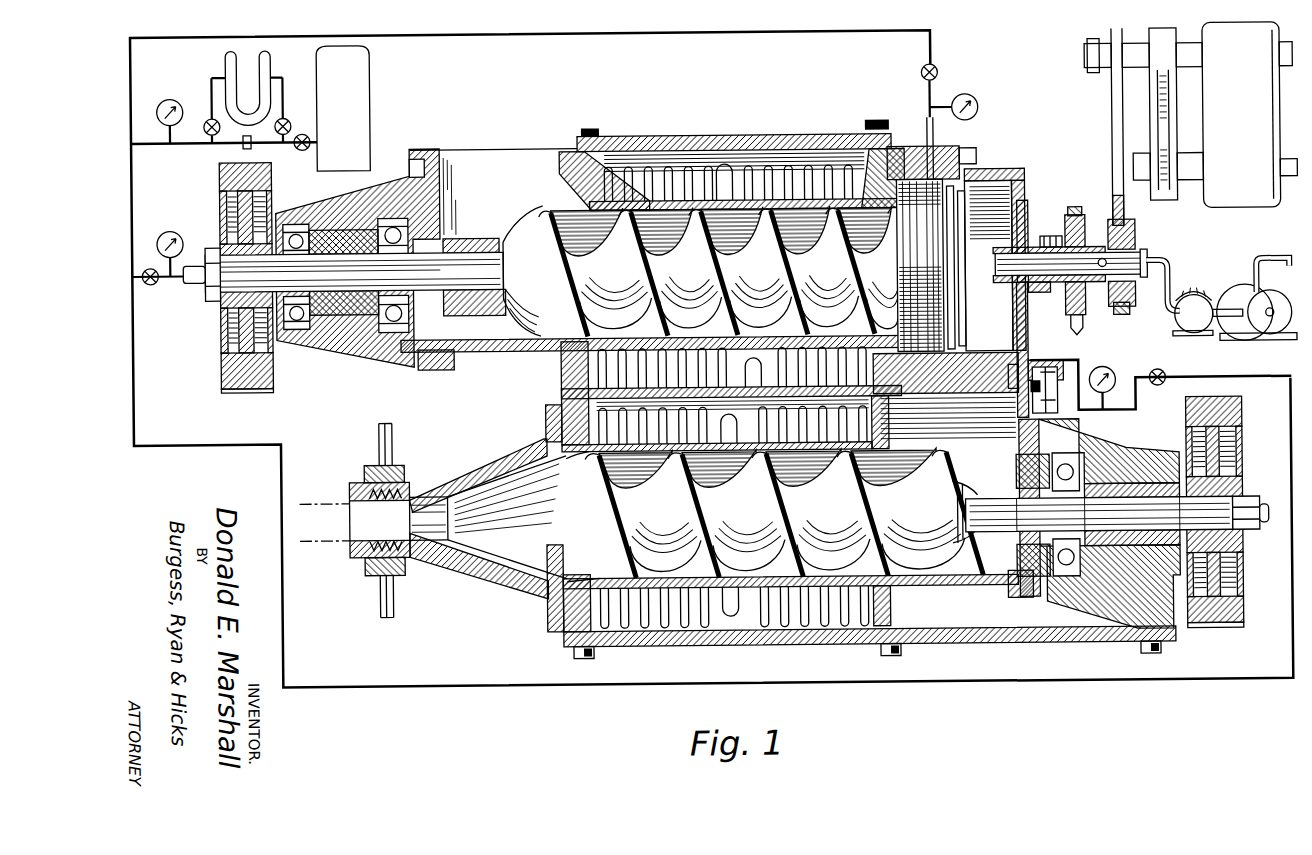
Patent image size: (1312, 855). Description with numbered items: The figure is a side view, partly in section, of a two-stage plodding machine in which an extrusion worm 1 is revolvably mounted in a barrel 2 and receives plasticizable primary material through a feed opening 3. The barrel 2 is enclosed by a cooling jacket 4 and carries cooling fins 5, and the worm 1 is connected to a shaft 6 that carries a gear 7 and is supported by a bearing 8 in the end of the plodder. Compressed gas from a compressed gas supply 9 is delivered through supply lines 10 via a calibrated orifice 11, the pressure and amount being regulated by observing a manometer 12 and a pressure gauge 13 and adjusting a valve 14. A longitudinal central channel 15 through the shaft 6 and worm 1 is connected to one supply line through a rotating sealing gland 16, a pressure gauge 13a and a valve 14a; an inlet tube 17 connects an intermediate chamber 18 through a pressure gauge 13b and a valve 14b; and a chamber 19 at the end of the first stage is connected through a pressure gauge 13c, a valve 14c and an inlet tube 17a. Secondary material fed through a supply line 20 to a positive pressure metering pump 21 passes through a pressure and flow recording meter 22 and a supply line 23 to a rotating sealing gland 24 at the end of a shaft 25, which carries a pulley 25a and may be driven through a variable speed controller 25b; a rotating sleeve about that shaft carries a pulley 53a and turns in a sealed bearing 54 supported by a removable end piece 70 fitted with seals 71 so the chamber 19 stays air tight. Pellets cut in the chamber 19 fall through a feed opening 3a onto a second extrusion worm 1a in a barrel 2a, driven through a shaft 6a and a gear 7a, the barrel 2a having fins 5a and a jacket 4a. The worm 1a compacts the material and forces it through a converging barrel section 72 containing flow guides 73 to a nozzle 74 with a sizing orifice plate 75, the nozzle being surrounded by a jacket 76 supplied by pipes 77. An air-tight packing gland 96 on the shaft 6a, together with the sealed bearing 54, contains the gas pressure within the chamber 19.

The extrusion worm 1 is at (576, 253).
The extrusion worm 1a is at (945, 440).
The barrel 2 is at (710, 338).
The barrel 2a is at (941, 590).
The feed opening 3 is at (497, 148).
The feed opening 3a is at (973, 391).
The cooling jacket 4 is at (677, 136).
The jacket 4a is at (979, 644).
The cooling fins 5 is at (749, 166).
The fins 5a is at (833, 617).
The shaft 6 is at (343, 283).
The shaft 6a is at (1122, 500).
The gear 7 is at (220, 173).
The gear 7a is at (1243, 607).
The bearing 8 is at (292, 338).
The compressed gas supply 9 is at (343, 109).
The supply lines 10 is at (475, 42).
The calibrated orifice 11 is at (241, 146).
The manometer 12 is at (225, 60).
The pressure gauge 13 is at (169, 99).
The pressure gauge 13a is at (170, 230).
The pressure gauge 13b is at (979, 93).
The pressure gauge 13c is at (1105, 367).
The valve 14 is at (300, 152).
The valve 14a is at (149, 285).
The valve 14b is at (921, 71).
The valve 14c is at (1160, 372).
The longitudinal central channel 15 is at (503, 267).
The rotating sealing gland 16 is at (205, 294).
The inlet tube 17 is at (935, 130).
The inlet tube 17a is at (1068, 360).
The intermediate chamber 18 is at (932, 200).
The chamber 19 is at (1005, 337).
The supply line 20 is at (1275, 256).
The positive pressure metering pump 21 is at (1236, 297).
The pressure and flow recording meter 22 is at (1195, 290).
The supply line 23 is at (1169, 270).
The rotating sealing gland 24 is at (1146, 254).
The shaft 25 is at (1088, 297).
The pulley 25a is at (1129, 311).
The variable speed controller 25b is at (1191, 124).
The pulley 53a is at (1047, 230).
The sealed bearing 54 is at (1020, 287).
The end piece 70 is at (1021, 168).
The seals 71 is at (1032, 382).
The converging barrel section 72 is at (500, 571).
The flow guides 73 is at (494, 478).
The nozzle 74 is at (413, 549).
The sizing orifice plate 75 is at (353, 497).
The jacket 76 is at (365, 567).
The pipes 77 is at (379, 435).
The air-tight packing gland 96 is at (1010, 477).